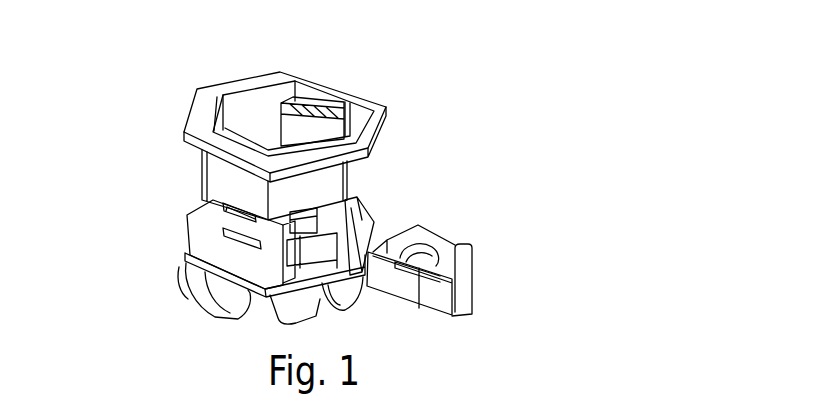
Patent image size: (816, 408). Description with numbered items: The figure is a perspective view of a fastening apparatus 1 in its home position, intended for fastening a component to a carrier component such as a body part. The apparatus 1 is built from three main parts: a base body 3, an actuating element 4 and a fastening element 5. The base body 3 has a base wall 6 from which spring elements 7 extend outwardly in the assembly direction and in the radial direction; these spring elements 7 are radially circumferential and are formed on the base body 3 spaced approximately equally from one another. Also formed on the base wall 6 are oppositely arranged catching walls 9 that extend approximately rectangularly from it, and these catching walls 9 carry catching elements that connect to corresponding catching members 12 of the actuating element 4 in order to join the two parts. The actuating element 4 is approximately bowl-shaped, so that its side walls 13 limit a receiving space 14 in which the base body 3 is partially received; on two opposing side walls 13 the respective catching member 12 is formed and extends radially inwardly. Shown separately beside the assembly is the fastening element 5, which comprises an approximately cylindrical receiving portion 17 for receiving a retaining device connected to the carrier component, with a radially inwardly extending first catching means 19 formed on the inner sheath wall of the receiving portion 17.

The fastening apparatus 1 is at (630, 53).
The base body 3 is at (362, 220).
The actuating element 4 is at (357, 110).
The fastening element 5 is at (445, 243).
The base wall 6 is at (200, 255).
The spring elements 7 is at (230, 295).
The catching walls 9 is at (207, 222).
The catching members 12 is at (310, 125).
The side walls 13 is at (345, 182).
The receiving space 14 is at (292, 78).
The receiving portion 17 is at (418, 250).
The first catching means 19 is at (418, 250).